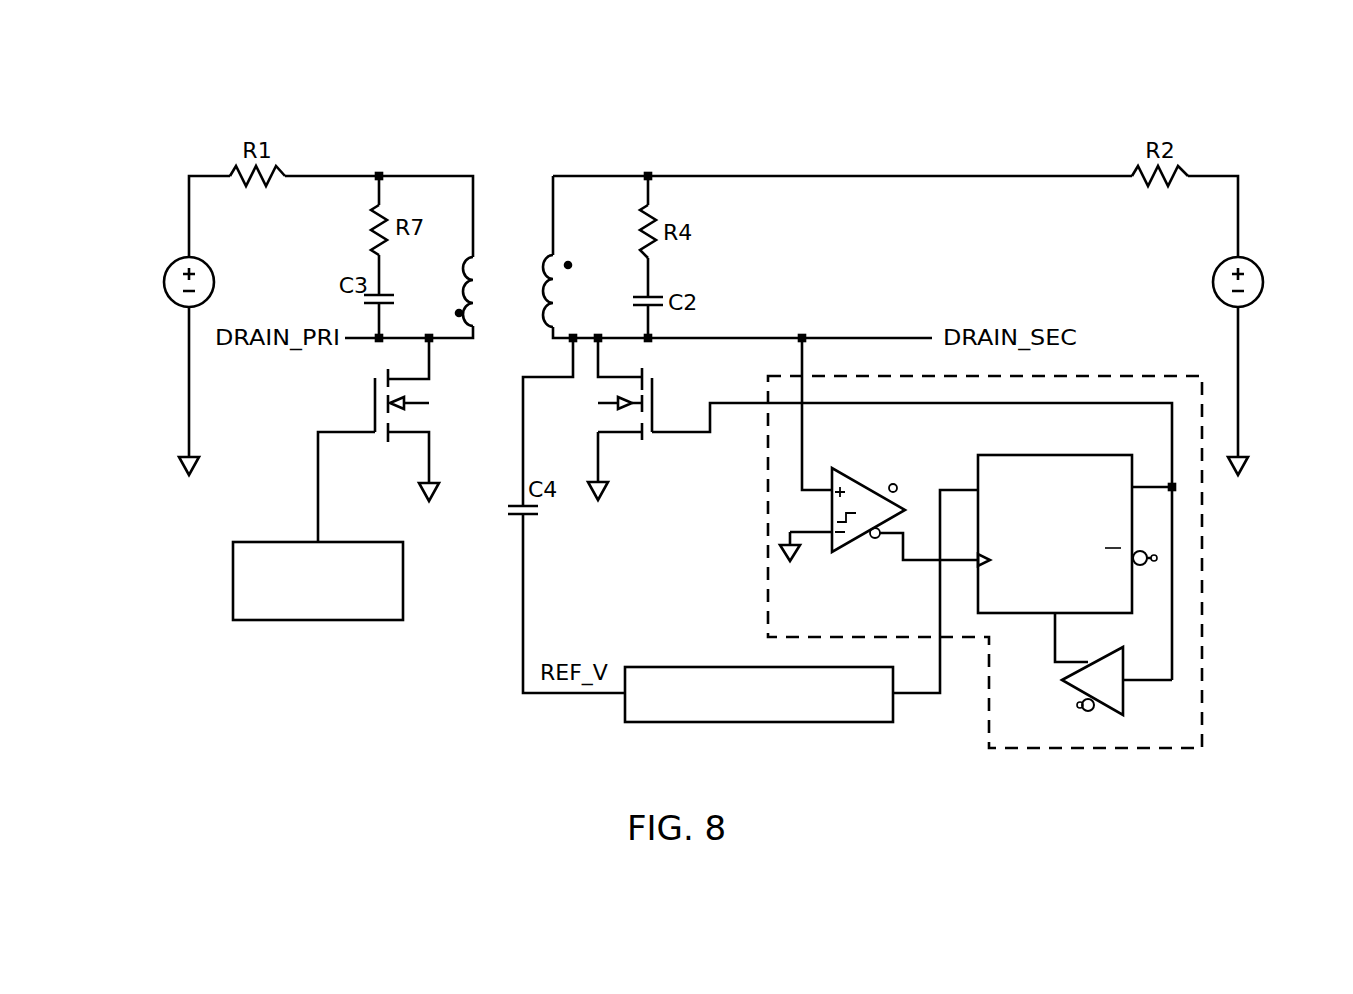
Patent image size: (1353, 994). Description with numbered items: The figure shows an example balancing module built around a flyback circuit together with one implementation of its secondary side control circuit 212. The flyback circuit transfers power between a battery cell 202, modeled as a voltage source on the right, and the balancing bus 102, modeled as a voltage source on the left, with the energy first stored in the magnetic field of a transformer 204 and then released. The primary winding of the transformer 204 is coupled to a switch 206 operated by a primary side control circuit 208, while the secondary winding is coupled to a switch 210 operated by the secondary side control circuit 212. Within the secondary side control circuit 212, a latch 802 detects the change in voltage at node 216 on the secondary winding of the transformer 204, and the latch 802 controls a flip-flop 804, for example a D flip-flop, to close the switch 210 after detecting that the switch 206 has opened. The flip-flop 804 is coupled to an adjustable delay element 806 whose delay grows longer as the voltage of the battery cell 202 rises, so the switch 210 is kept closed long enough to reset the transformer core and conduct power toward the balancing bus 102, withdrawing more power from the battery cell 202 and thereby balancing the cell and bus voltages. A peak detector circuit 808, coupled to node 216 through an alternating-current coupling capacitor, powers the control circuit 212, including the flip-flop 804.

The balancing bus 102 is at (209, 268).
The battery cell 202 is at (1218, 263).
The transformer 204 is at (514, 165).
The switch 206 is at (444, 390).
The primary side control circuit 208 is at (335, 620).
The switch 210 is at (578, 402).
The secondary side control circuit 212 is at (1127, 750).
The node 216 is at (648, 342).
The latch 802 is at (833, 550).
The flip-flop 804 is at (1023, 453).
The adjustable delay element 806 is at (1123, 697).
The peak detector circuit 808 is at (825, 722).